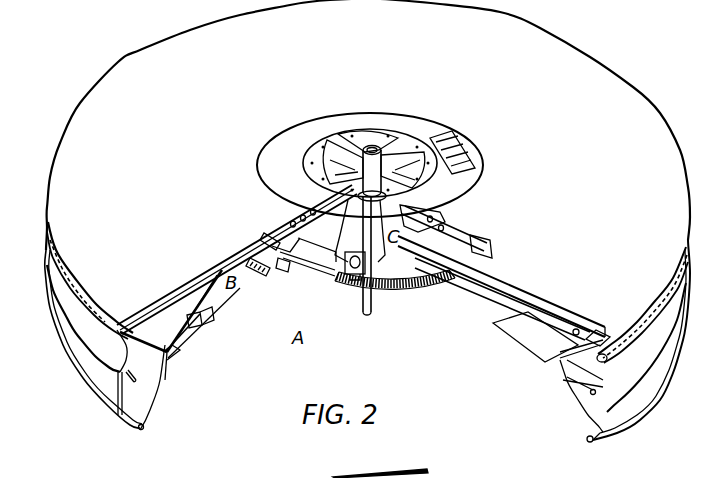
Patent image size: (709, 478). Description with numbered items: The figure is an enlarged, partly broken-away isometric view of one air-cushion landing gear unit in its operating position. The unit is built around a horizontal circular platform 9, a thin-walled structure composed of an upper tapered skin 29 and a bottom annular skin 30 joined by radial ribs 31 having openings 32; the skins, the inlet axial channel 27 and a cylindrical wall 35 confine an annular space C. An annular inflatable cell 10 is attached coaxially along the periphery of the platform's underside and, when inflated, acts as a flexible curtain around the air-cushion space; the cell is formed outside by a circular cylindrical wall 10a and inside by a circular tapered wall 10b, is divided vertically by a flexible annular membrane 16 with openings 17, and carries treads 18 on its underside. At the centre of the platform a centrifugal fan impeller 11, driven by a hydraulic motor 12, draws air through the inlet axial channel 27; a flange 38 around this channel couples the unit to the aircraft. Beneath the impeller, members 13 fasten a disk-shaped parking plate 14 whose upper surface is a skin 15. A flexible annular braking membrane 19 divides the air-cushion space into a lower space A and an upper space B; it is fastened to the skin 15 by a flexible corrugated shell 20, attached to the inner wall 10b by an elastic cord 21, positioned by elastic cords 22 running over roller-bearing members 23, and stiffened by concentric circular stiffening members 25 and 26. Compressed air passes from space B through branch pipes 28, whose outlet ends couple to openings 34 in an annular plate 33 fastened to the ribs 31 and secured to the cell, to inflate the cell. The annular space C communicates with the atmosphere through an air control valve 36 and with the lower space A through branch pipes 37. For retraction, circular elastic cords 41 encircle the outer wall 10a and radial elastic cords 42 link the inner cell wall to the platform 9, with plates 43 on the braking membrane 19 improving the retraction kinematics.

The horizontal circular platform 9 is at (366, 125).
The annular inflatable cell 10 is at (99, 326).
The circular cylindrical wall 10a is at (82, 383).
The circular tapered wall 10b is at (175, 348).
The impeller 11 is at (280, 228).
The hydraulic motor 12 is at (375, 150).
The members 13 is at (286, 270).
The parking plate 14 is at (308, 276).
The skin 15 is at (372, 300).
The flexible annular membrane 16 is at (115, 322).
The openings 17 is at (608, 358).
The treads 18 is at (578, 418).
The flexible annular braking membrane 19 is at (200, 352).
The flexible corrugated shell 20 is at (432, 285).
The elastic cord 21 is at (163, 370).
The elastic cords 22 is at (250, 292).
The roller-bearing members 23 is at (203, 323).
The concentric circular stiffening member 25 is at (195, 322).
The concentric circular stiffening member 26 is at (260, 274).
The inlet axial channel 27 is at (326, 160).
The branch pipes 28 is at (507, 290).
The upper tapered skin 29 is at (72, 117).
The bottom annular skin 30 is at (418, 212).
The radial ribs 31 is at (506, 266).
The openings 32 is at (300, 212).
The annular plate 33 is at (527, 340).
The openings 34 is at (600, 337).
The cylindrical wall 35 is at (478, 233).
The air control valve 36 is at (452, 137).
The branch pipes 37 is at (353, 282).
The flange 38 is at (370, 126).
The circular elastic cords 41 is at (131, 385).
The radial elastic cords 42 is at (160, 336).
The plates 43 is at (163, 378).